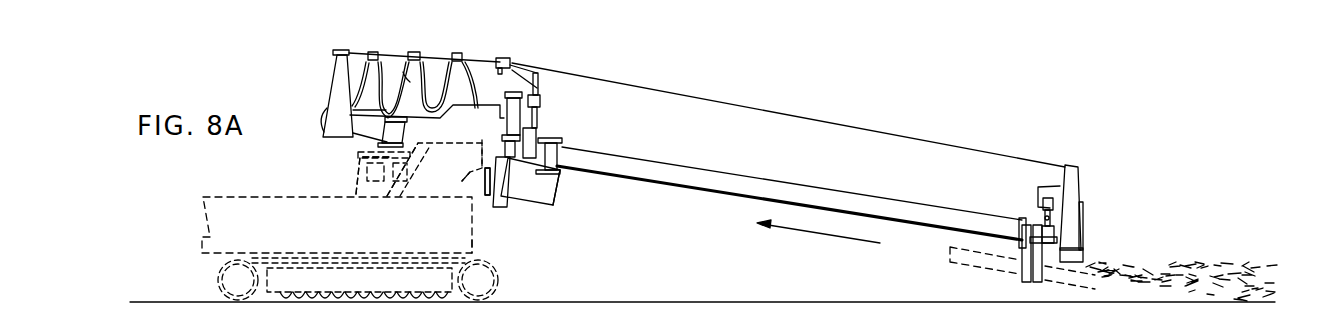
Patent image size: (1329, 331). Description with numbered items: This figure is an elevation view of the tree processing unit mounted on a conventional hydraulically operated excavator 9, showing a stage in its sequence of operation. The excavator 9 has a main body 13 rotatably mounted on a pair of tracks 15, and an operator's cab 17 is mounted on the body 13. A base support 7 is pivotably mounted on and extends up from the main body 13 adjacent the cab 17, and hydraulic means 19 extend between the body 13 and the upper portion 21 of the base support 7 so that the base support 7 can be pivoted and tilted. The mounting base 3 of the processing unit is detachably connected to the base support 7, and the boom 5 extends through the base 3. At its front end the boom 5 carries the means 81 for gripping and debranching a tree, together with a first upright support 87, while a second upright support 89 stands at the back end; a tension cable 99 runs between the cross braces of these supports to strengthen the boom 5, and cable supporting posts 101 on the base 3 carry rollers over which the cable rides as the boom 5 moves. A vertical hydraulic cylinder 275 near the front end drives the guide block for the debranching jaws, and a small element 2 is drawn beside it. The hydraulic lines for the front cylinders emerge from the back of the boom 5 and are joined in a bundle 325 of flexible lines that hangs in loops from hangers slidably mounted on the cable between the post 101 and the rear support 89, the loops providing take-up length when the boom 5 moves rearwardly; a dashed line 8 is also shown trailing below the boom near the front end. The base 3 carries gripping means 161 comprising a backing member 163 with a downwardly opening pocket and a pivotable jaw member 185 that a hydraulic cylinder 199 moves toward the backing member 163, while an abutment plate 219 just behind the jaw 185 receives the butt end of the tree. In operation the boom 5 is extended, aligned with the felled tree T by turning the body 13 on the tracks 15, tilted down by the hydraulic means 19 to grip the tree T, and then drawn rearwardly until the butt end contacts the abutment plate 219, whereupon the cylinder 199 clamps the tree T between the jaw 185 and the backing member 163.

The bundle of flexible lines 325 is at (404, 72).
The second upright support 89 is at (334, 70).
The cable supporting post 101 is at (541, 93).
The hydraulic cylinder 199 is at (503, 122).
The mounting base 3 is at (553, 139).
The abutment plate 219 is at (478, 165).
The operator's cab 17 is at (357, 178).
The base support 7 is at (420, 172).
The upper portion of base support 21 is at (452, 178).
The hydraulic means 19 is at (458, 186).
The excavator 9 is at (196, 231).
The main body 13 is at (479, 243).
The tracks 15 is at (497, 280).
The jaw member 185 is at (496, 207).
The gripping means 161 is at (559, 214).
The backing member 163 is at (563, 191).
The tension cable 99 is at (828, 122).
The boom 5 is at (855, 190).
The hose 8 is at (950, 250).
The vertical hydraulic cylinder 275 is at (1040, 214).
The pin 2 is at (1038, 211).
The first upright support 87 is at (1082, 180).
The means for gripping and debranching a tree 81 is at (1016, 281).
The tree T is at (1130, 262).